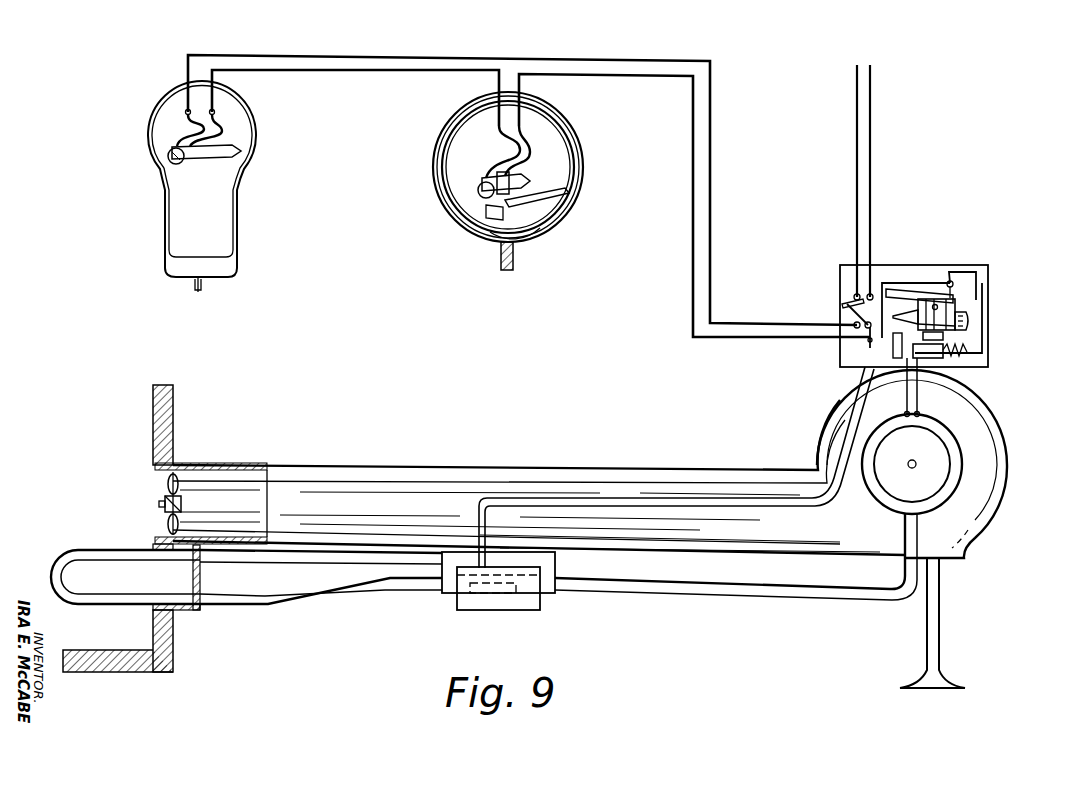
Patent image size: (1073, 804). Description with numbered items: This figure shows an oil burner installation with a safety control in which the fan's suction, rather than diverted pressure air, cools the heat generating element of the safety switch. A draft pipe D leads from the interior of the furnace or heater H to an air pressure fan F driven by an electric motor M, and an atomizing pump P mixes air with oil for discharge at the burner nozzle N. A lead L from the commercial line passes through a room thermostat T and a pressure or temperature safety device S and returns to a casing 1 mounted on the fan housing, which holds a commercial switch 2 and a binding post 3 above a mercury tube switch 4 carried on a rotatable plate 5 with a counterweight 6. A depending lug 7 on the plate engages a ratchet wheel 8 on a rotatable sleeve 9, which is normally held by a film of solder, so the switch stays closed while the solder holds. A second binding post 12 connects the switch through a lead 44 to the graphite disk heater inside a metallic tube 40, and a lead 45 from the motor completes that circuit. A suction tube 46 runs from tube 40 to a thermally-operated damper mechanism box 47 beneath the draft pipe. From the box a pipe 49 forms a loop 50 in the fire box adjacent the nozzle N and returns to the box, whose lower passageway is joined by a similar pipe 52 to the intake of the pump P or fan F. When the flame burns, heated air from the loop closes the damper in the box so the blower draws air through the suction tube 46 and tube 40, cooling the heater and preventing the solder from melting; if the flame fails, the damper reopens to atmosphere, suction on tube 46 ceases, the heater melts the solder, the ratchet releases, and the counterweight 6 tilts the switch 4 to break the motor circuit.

The lead L is at (446, 58).
The room thermostat T is at (209, 203).
The pressure or temperature safety device S is at (585, 175).
The casing 1 is at (899, 273).
The switch 2 is at (848, 312).
The binding post 3 is at (949, 281).
The binding post 12 is at (953, 274).
The counterweight 6 is at (886, 292).
The plate 5 is at (937, 308).
The lead 44 is at (968, 318).
The mercury tube switch 4 is at (968, 322).
The ratchet wheel 8 is at (944, 336).
The rotatable sleeve 9 is at (968, 351).
The depending lug 7 is at (869, 340).
The metallic tube 40 is at (933, 354).
The suction tube 46 is at (860, 393).
The lead 45 is at (920, 403).
The air pressure fan F is at (1004, 431).
The atomizing pump P is at (934, 468).
The electric motor M is at (953, 488).
The draft pipe D is at (455, 475).
The furnace or heater H is at (153, 404).
The burner nozzle N is at (160, 505).
The loop 50 is at (60, 568).
The pipe 49 is at (284, 561).
The thermally-operated damper mechanism box 47 is at (510, 598).
The pipe 52 is at (790, 590).